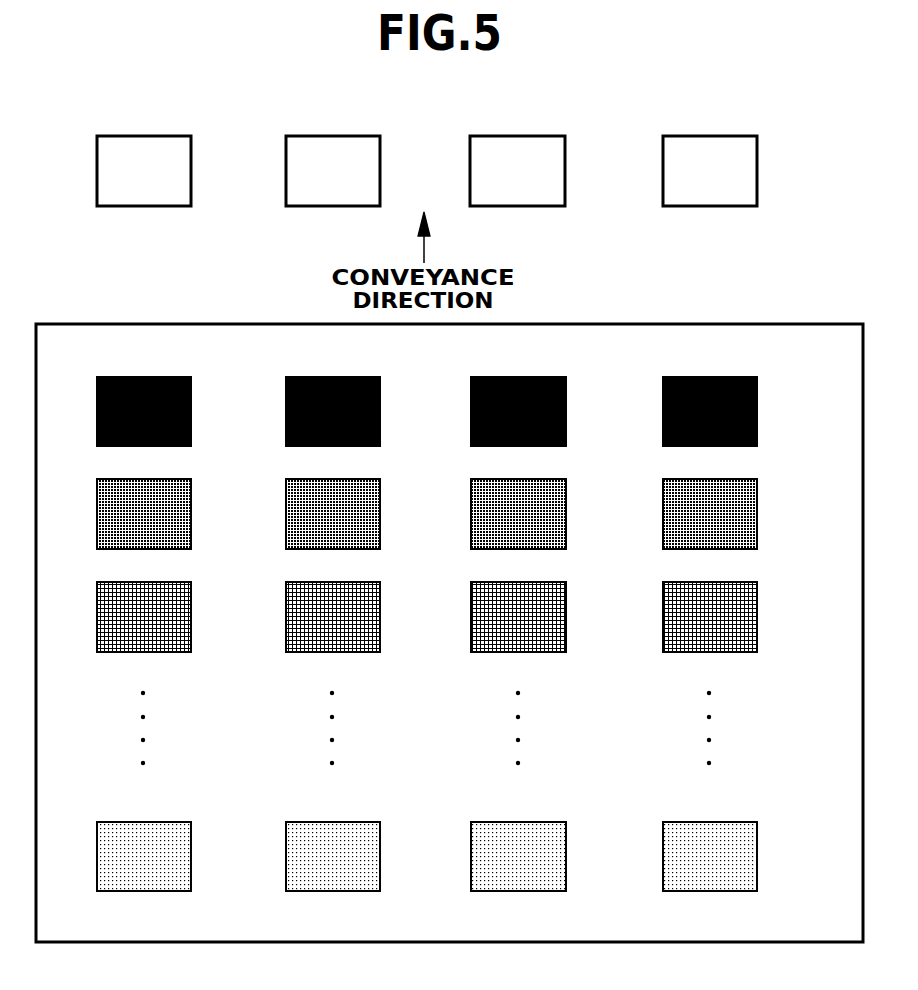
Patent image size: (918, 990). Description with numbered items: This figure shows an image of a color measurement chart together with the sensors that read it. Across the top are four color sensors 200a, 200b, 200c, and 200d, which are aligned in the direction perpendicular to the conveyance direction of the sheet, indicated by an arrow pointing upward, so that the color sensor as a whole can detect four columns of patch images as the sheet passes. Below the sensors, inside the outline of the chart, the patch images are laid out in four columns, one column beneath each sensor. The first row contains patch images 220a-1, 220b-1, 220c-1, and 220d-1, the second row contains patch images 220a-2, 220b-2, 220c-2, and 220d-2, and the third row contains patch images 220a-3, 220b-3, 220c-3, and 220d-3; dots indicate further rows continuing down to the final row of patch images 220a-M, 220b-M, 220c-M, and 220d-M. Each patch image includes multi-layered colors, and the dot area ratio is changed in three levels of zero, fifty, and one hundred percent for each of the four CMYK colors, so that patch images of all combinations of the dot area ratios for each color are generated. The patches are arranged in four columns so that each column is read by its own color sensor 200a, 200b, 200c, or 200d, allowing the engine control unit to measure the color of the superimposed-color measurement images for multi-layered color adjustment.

The color sensor 200a is at (139, 135).
The color sensor 200b is at (333, 135).
The color sensor 200c is at (521, 135).
The color sensor 200d is at (716, 135).
The patch image 220a-1 is at (130, 377).
The patch image 220b-1 is at (319, 377).
The patch image 220c-1 is at (506, 377).
The patch image 220d-1 is at (696, 377).
The patch image 220a-2 is at (130, 479).
The patch image 220b-2 is at (319, 479).
The patch image 220c-2 is at (506, 479).
The patch image 220d-2 is at (696, 479).
The patch image 220a-3 is at (130, 582).
The patch image 220b-3 is at (319, 582).
The patch image 220c-3 is at (506, 582).
The patch image 220d-3 is at (696, 582).
The patch image 220a-M is at (130, 822).
The patch image 220b-M is at (319, 822).
The patch image 220c-M is at (506, 822).
The patch image 220d-M is at (696, 822).